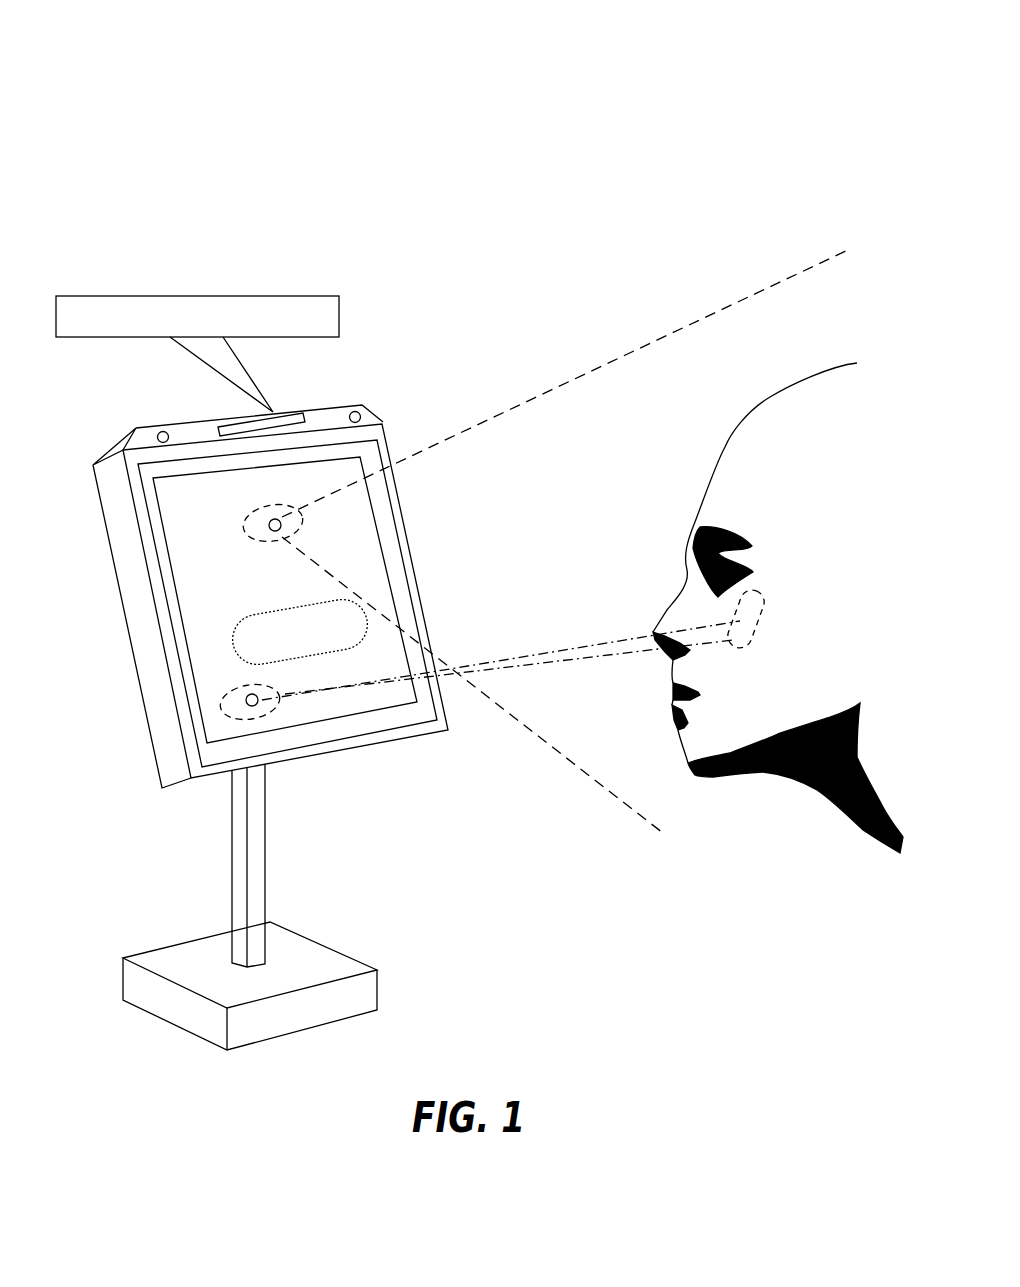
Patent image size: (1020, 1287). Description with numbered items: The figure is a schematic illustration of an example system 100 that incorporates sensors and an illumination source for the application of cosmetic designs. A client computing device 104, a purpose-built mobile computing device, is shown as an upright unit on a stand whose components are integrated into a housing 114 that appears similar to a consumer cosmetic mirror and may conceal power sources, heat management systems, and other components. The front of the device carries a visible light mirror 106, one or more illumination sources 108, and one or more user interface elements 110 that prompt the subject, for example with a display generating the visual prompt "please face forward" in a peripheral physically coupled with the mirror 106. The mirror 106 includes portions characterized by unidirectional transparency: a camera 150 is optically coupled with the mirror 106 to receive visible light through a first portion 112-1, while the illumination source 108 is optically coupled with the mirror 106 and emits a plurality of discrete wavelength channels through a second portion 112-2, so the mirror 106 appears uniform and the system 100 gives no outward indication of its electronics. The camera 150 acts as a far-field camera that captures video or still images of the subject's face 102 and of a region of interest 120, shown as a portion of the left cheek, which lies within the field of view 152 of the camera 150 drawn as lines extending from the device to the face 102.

The system 100 is at (173, 78).
The subject's face 102 is at (730, 440).
The client computing device 104 is at (137, 635).
The visible light mirror 106 is at (365, 547).
The illumination source 108 is at (160, 432).
The user interface element 110 is at (128, 296).
The first portion 112-1 is at (245, 528).
The second portion 112-2 is at (223, 708).
The housing 114 is at (137, 983).
The region of interest 120 is at (765, 600).
The camera 150 is at (237, 424).
The field of view 152 is at (498, 413).